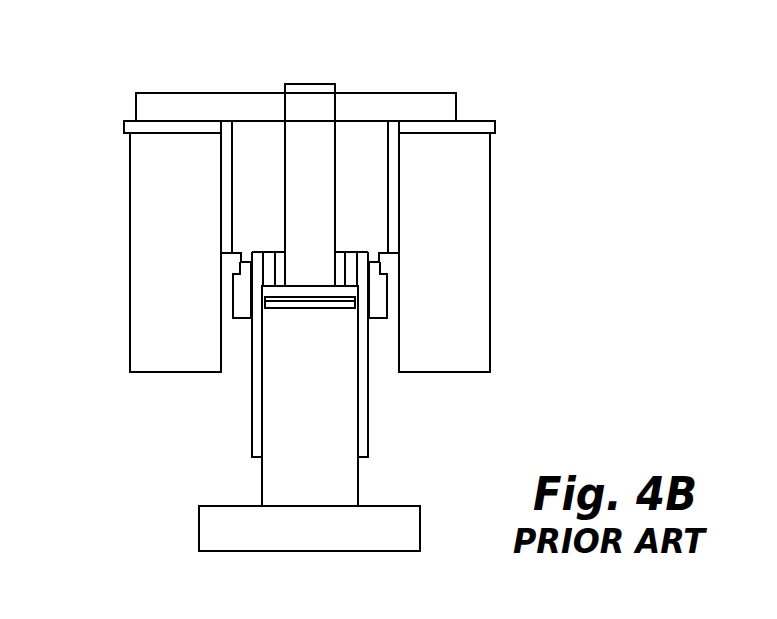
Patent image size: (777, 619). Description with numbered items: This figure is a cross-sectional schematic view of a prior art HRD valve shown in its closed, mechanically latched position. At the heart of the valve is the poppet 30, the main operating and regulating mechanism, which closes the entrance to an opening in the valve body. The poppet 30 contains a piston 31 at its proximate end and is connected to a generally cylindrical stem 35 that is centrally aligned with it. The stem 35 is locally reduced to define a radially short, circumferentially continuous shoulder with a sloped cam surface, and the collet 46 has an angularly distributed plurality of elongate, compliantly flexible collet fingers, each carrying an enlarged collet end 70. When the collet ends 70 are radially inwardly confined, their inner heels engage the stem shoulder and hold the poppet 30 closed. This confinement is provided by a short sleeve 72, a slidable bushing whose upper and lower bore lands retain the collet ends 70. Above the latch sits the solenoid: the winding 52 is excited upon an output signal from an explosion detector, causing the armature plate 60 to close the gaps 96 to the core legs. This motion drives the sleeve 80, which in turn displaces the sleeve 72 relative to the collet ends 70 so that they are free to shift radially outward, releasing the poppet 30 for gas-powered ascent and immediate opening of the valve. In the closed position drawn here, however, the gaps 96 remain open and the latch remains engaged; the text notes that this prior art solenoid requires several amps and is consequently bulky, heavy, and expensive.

The poppet 30 is at (345, 478).
The piston 31 is at (408, 533).
The stem 35 is at (316, 96).
The collet 46 is at (266, 241).
The winding 52 is at (160, 303).
The armature plate 60 is at (143, 105).
The collet end 70 is at (352, 255).
The sleeve 72 is at (388, 311).
The sleeve 80 is at (393, 128).
The gaps 96 is at (124, 128).